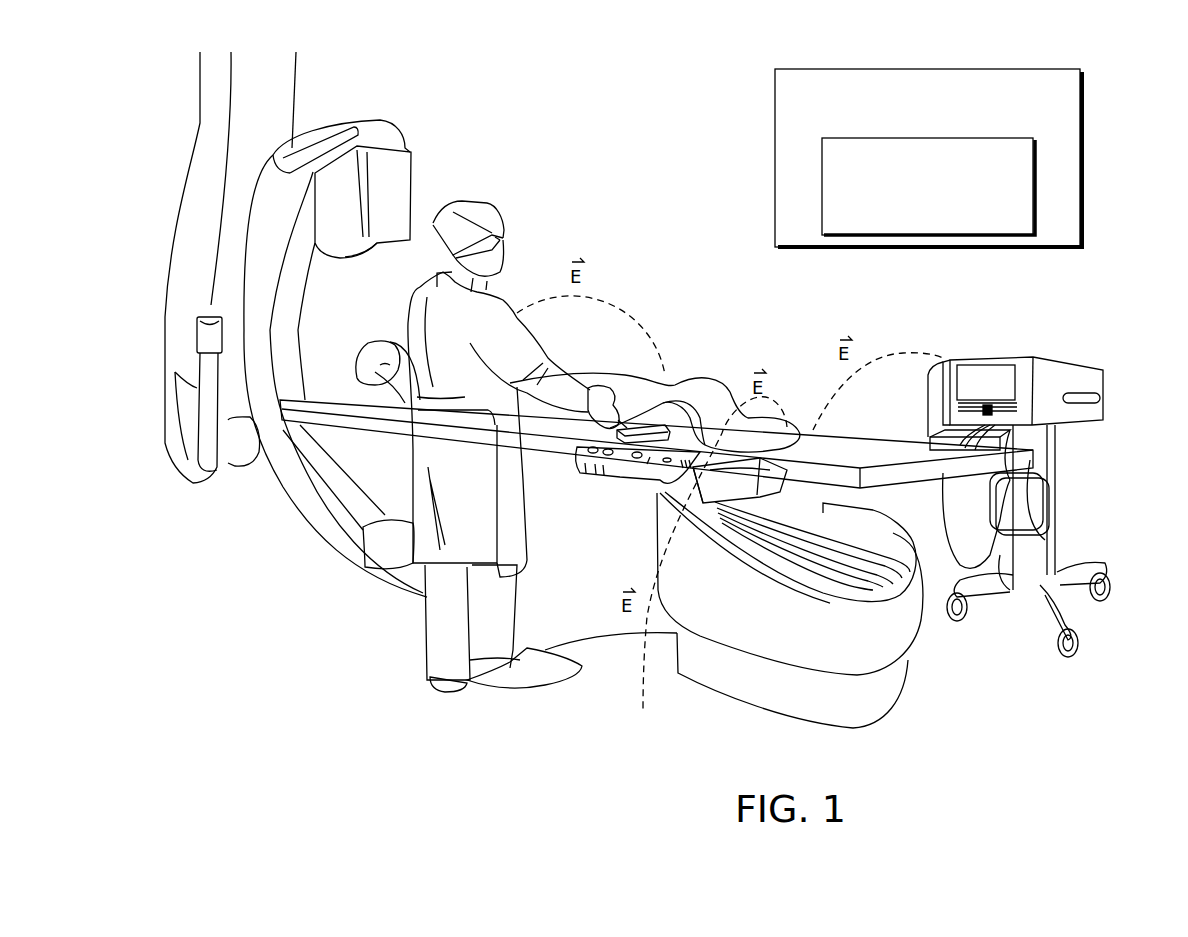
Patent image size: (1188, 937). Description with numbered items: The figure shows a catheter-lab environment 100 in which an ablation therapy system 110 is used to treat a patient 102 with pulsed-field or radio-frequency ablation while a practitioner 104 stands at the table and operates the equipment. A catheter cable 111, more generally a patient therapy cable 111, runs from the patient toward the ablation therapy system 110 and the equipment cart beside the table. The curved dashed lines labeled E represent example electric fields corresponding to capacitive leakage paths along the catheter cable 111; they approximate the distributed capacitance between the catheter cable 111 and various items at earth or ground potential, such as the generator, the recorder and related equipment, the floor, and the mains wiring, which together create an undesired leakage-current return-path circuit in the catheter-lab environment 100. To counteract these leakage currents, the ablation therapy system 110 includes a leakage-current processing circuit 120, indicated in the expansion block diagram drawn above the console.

The catheter-lab environment 100 is at (647, 76).
The patient 102 is at (368, 340).
The practitioner 104 is at (470, 197).
The ablation therapy system 110 is at (779, 250).
The catheter cable 111 is at (607, 387).
The leakage-current processing circuit 120 is at (928, 186).